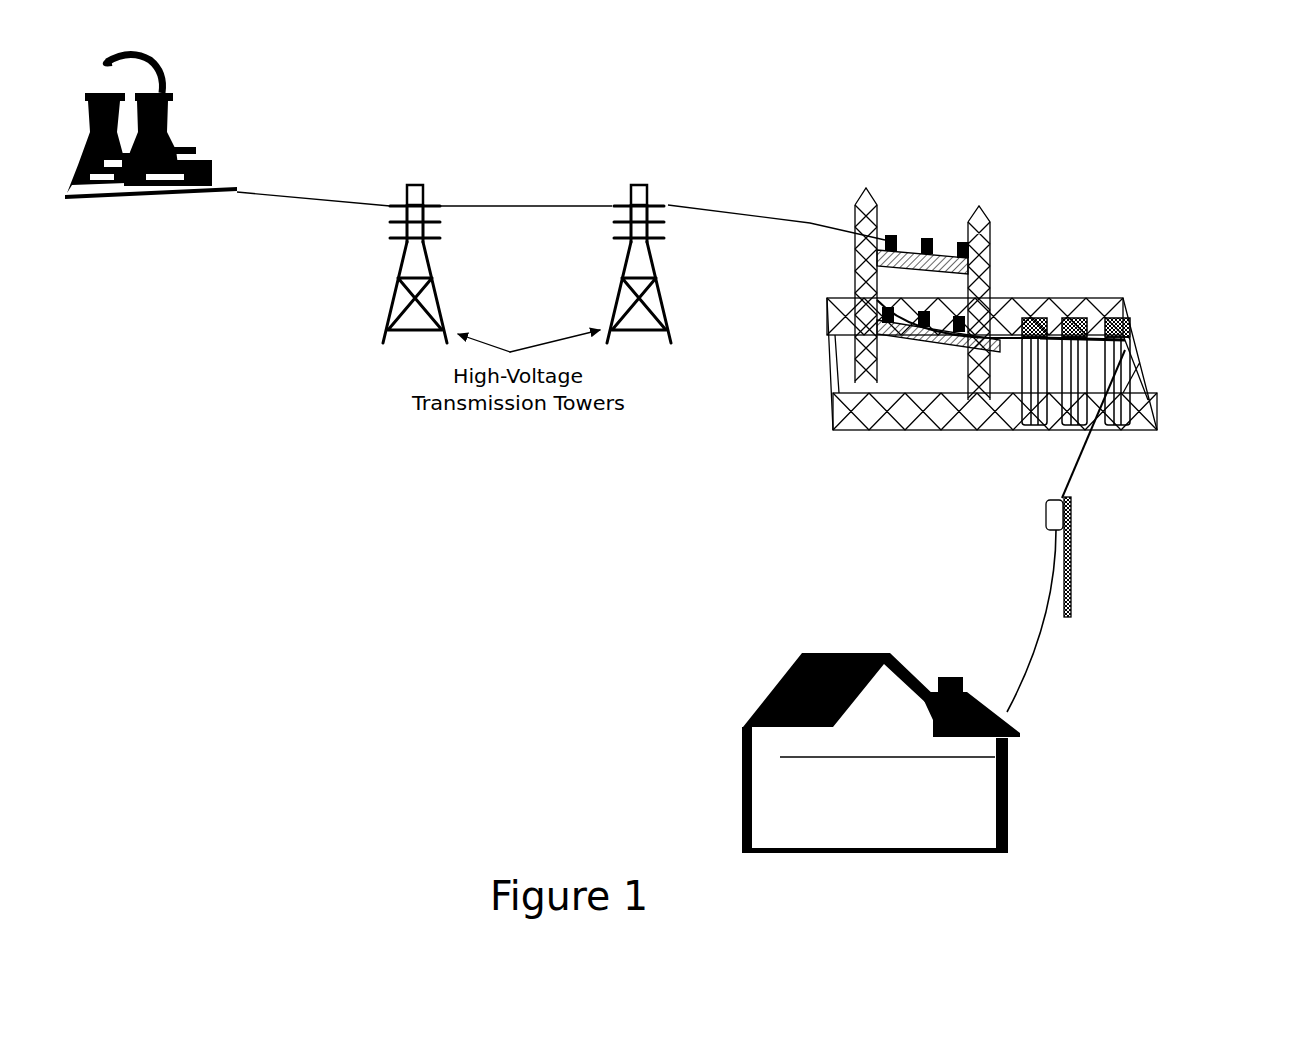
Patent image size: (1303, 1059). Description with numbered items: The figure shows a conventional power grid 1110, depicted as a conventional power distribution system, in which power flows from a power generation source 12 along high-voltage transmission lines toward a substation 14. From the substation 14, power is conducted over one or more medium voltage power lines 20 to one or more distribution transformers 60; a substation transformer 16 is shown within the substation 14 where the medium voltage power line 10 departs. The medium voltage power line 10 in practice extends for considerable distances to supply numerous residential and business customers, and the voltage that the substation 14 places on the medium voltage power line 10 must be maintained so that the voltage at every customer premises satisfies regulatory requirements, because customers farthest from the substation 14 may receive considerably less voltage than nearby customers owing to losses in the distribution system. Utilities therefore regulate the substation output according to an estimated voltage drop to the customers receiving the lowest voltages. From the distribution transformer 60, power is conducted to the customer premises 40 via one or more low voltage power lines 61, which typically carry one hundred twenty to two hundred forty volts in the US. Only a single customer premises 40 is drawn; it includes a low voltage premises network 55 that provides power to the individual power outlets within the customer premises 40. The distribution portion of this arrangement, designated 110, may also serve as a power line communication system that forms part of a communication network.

The power generation source 12 is at (190, 114).
The medium voltage power lines 20 is at (561, 128).
The substation 14 is at (937, 309).
The substation transformer 16 is at (1141, 317).
The medium voltage power line 10 is at (944, 463).
The distribution transformer 60 is at (1148, 566).
The low voltage power lines 61 is at (1098, 667).
The customer premises 40 is at (737, 768).
The low voltage premises network 55 is at (887, 788).
The PLCS 110 is at (1127, 481).
The conventional power grid 1110 is at (481, 531).